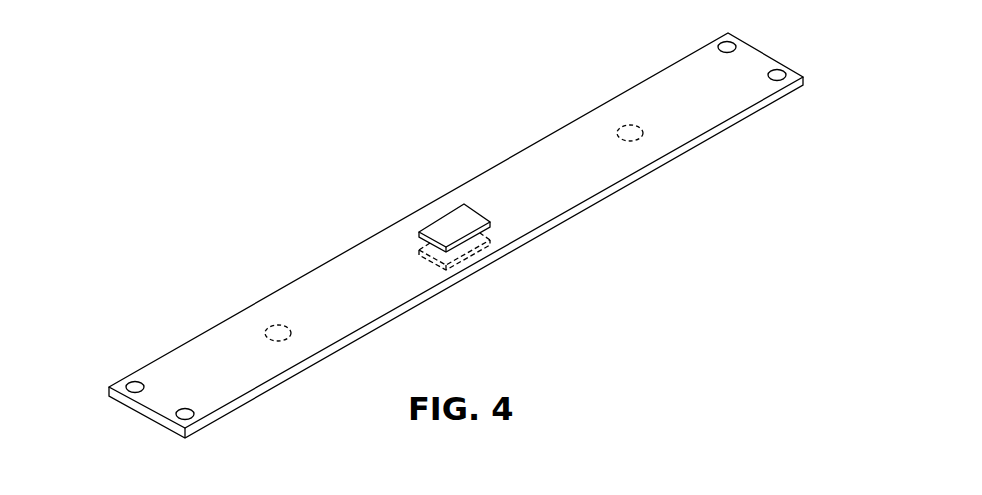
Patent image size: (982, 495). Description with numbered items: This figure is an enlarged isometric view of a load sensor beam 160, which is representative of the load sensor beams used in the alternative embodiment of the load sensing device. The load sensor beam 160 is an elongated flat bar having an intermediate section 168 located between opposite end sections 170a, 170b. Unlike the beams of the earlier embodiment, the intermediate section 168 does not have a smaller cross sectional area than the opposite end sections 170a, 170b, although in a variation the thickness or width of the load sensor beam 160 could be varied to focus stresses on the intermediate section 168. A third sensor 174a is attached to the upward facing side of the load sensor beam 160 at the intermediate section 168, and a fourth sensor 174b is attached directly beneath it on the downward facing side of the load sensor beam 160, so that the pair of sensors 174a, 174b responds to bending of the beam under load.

The load sensor beam 160 is at (585, 128).
The intermediate section 168 is at (377, 245).
The end section 170a is at (177, 362).
The end section 170b is at (703, 58).
The third sensor 174a is at (455, 215).
The fourth sensor 174b is at (478, 252).